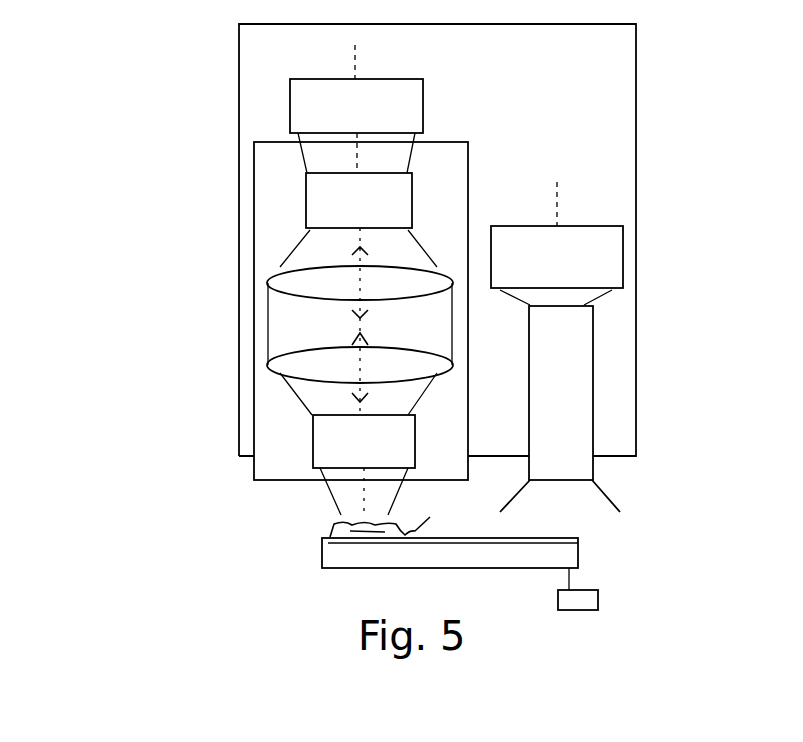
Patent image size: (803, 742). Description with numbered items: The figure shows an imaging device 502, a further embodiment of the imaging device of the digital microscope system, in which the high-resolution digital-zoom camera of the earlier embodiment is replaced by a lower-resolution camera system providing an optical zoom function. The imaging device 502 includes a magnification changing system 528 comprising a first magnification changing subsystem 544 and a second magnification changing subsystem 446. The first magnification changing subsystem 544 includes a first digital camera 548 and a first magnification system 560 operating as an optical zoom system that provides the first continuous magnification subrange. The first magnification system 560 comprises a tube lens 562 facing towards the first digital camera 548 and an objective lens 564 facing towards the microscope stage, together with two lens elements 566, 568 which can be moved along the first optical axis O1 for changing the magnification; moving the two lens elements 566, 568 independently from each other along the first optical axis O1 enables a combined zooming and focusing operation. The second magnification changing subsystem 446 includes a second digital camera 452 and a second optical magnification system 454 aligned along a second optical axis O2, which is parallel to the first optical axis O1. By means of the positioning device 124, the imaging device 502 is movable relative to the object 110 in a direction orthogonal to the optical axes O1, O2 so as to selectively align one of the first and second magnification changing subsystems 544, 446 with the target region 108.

The imaging device 502 is at (636, 140).
The first magnification changing subsystem 544 is at (229, 383).
The first digital camera 548 is at (290, 104).
The magnification changing system 528 is at (571, 150).
The tube lens 562 is at (306, 186).
The first magnification system 560 is at (262, 312).
The lens element 566 is at (268, 270).
The lens element 568 is at (268, 350).
The objective lens 564 is at (313, 447).
The second digital camera 452 is at (624, 265).
The second magnification changing subsystem 446 is at (633, 380).
The second optical magnification system 454 is at (593, 453).
The target region 108 is at (345, 525).
The object 110 is at (406, 531).
The positioning device 124 is at (600, 600).
The first optical axis O1 is at (353, 58).
The second optical axis O2 is at (565, 193).